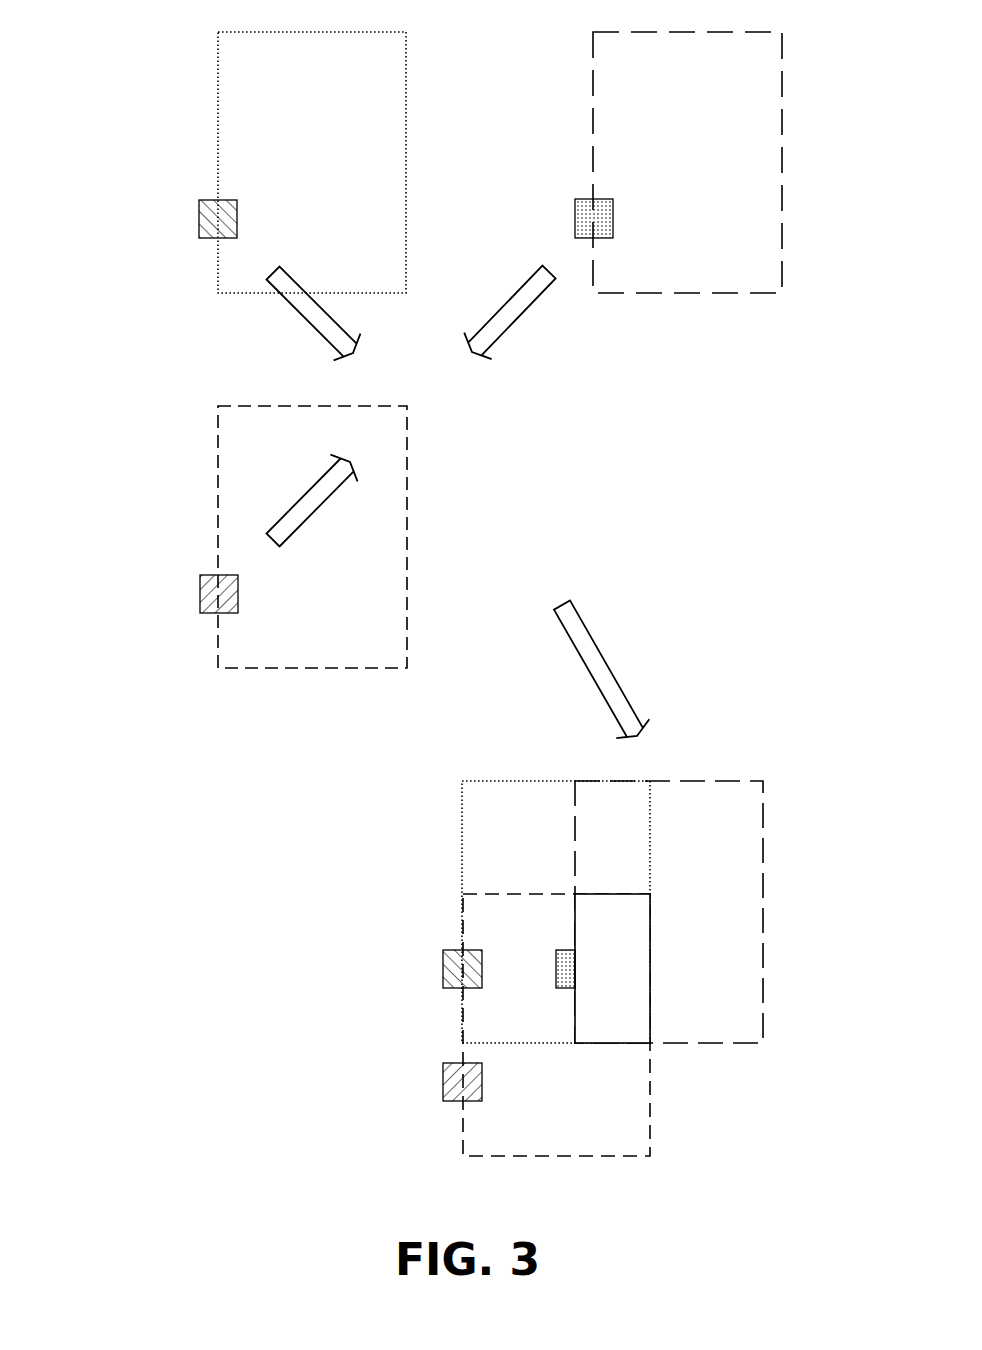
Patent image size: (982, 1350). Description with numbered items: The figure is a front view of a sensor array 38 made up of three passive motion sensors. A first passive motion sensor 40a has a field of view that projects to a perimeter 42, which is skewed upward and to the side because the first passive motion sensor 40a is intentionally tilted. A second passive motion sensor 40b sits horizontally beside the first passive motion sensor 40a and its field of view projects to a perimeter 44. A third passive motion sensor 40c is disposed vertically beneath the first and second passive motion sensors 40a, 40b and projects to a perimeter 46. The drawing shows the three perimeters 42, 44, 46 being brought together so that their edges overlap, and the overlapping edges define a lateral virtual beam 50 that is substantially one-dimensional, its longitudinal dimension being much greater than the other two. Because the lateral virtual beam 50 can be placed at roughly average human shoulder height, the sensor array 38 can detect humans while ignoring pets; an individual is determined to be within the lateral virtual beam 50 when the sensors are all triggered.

The sensor array 38 is at (287, 858).
The first passive motion sensor 40a is at (198, 218).
The second passive motion sensor 40b is at (573, 218).
The third passive motion sensor 40c is at (199, 595).
The perimeter 42 is at (218, 88).
The perimeter 44 is at (583, 83).
The perimeter 46 is at (215, 443).
The lateral virtual beam 50 is at (626, 982).